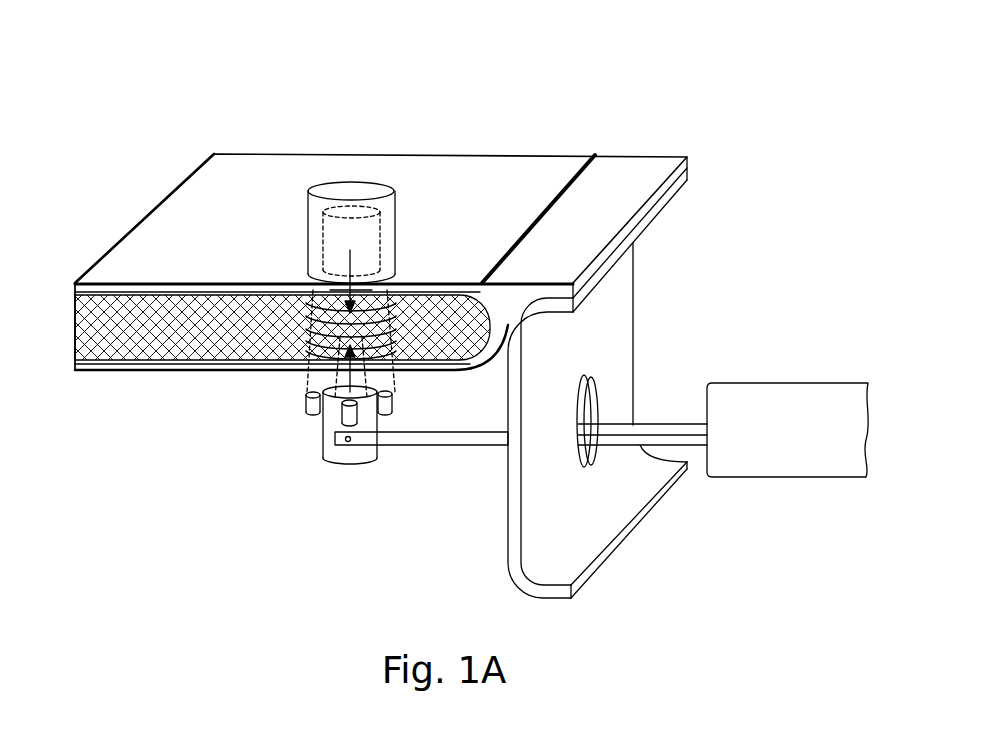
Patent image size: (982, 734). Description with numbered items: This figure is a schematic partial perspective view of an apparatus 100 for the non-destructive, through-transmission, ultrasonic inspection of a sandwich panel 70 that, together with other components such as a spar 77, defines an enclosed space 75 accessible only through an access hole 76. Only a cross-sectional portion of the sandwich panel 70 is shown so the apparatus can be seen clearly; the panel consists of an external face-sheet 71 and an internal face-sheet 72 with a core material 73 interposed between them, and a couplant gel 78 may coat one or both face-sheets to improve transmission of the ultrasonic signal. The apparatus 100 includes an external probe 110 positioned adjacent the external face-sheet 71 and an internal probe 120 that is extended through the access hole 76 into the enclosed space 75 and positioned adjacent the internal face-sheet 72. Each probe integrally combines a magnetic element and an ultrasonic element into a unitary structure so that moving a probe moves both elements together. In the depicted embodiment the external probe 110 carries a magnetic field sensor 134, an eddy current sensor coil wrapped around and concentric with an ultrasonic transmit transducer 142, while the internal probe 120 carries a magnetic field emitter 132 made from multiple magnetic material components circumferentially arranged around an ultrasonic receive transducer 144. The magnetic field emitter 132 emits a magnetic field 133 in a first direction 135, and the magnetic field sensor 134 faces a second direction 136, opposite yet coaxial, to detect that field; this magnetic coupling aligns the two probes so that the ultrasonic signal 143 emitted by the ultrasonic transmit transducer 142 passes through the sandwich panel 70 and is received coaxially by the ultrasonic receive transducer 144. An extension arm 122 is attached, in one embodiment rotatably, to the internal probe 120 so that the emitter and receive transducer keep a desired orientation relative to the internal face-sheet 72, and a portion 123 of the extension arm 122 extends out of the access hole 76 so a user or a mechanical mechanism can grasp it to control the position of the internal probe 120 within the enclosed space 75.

The apparatus 100 is at (143, 65).
The external probe 110 is at (401, 177).
The magnetic field sensor 134 is at (392, 222).
The ultrasonic transmit transducer 142 is at (333, 230).
The ultrasonic signal 143 is at (323, 315).
The second direction 136 is at (350, 290).
The sandwich panel 70 is at (566, 148).
The spar 77 is at (613, 297).
The access hole 76 is at (593, 387).
The couplant gel 78 is at (108, 268).
The external face-sheet 71 is at (77, 292).
The core material 73 is at (88, 320).
The internal face-sheet 72 is at (92, 367).
The enclosed space 75 is at (160, 421).
The internal probe 120 is at (294, 492).
The first direction 135 is at (395, 366).
The ultrasonic receive transducer 144 is at (365, 455).
The magnetic field 133 is at (311, 381).
The magnetic field emitter 132 is at (345, 418).
The extension arm 122 is at (463, 454).
The portion of the extension arm 123 is at (812, 398).